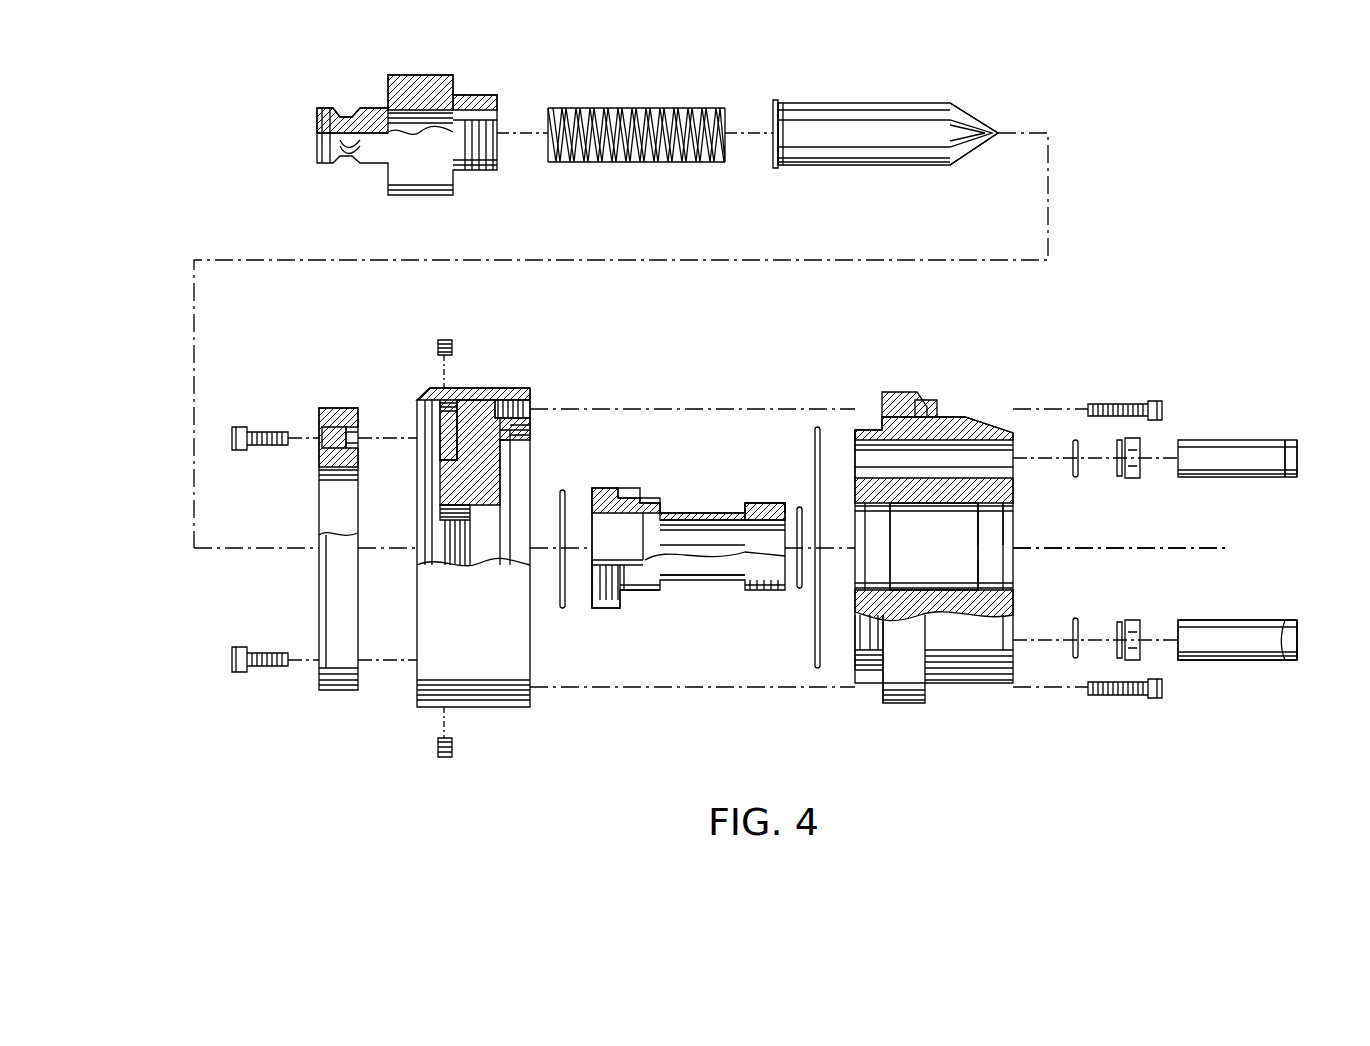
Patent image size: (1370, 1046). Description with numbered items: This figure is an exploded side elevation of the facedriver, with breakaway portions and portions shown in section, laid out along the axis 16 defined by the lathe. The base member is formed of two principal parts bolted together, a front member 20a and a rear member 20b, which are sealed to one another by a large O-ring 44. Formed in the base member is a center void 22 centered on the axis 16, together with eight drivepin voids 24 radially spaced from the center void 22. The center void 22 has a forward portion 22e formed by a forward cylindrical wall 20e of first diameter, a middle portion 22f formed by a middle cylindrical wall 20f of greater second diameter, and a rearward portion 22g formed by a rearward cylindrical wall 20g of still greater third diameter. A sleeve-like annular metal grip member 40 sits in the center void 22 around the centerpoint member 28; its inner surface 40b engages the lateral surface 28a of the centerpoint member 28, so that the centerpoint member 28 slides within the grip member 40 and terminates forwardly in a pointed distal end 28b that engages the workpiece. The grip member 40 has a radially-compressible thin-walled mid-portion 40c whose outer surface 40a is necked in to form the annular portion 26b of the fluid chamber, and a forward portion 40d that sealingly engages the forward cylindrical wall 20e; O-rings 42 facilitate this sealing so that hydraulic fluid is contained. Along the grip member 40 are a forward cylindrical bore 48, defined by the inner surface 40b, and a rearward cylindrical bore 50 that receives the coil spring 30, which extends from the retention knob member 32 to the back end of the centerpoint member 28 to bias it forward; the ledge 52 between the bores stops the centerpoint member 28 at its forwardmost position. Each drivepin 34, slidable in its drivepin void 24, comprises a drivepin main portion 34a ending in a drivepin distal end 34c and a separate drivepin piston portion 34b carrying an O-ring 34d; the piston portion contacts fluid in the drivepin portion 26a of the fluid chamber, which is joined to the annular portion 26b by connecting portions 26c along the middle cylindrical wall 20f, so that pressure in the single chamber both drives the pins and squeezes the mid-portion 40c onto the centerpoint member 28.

The axis 16 is at (1196, 548).
The front member 20a is at (945, 425).
The rear member 20b is at (480, 400).
The forward cylindrical wall 20e is at (990, 512).
The middle cylindrical wall 20f is at (975, 580).
The rearward cylindrical wall 20g is at (862, 575).
The center void 22 is at (875, 460).
The forward portion of center void 22e is at (990, 548).
The middle portion of center void 22f is at (934, 546).
The rearward portion of center void 22g is at (880, 520).
The drivepin void 24 is at (970, 445).
The drivepin portion of fluid chamber 26a is at (862, 455).
The annular portion of fluid chamber 26b is at (702, 504).
The connecting portion of fluid chamber 26c is at (640, 500).
The centerpoint member 28 is at (880, 120).
The lateral surface 28a is at (787, 103).
The pointed distal end 28b is at (965, 115).
The coil spring 30 is at (613, 110).
The retention knob member 32 is at (372, 108).
The drivepin 34 is at (1218, 440).
The drivepin main portion 34a is at (1215, 620).
The drivepin piston portion 34b is at (1140, 445).
The drivepin distal end 34c is at (1313, 425).
The O-ring 34d is at (1075, 440).
The grip member 40 is at (640, 592).
The outer surface 40a is at (666, 520).
The inner surface 40b is at (680, 548).
The mid-portion 40c is at (652, 515).
The forward portion 40d is at (755, 505).
The O-ring 42 is at (562, 608).
The large O-ring 44 is at (815, 430).
The forward cylindrical bore 48 is at (700, 560).
The rearward cylindrical bore 50 is at (610, 553).
The ledge 52 is at (600, 535).